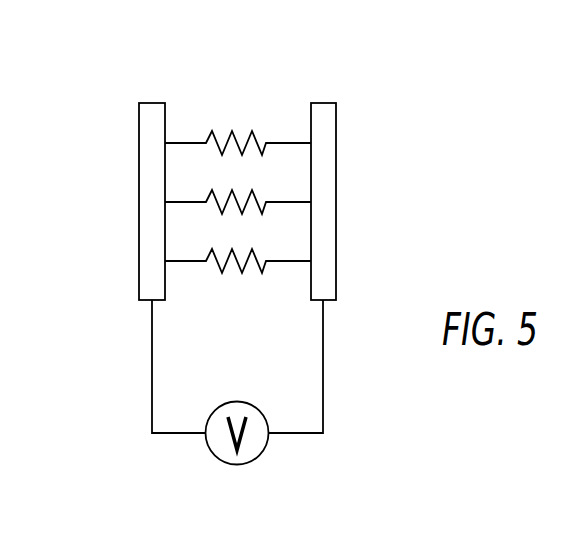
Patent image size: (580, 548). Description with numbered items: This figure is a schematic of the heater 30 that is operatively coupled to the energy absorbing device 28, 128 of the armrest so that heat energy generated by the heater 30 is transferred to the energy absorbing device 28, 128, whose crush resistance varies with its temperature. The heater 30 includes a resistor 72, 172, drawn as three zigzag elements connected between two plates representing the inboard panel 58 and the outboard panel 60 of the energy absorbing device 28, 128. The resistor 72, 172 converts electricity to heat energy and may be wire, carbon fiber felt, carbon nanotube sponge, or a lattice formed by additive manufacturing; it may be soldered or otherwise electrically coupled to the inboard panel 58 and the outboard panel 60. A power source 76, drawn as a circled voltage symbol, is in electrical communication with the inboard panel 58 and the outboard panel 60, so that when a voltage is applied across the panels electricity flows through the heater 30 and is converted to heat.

The energy absorbing device 28 is at (276, 163).
The energy absorbing device 128 is at (458, 138).
The heater 30 is at (70, 145).
The inboard panel 58 is at (139, 257).
The outboard panel 60 is at (336, 143).
The resistor 72 is at (251, 149).
The resistor 172 is at (285, 143).
The power source 76 is at (227, 463).